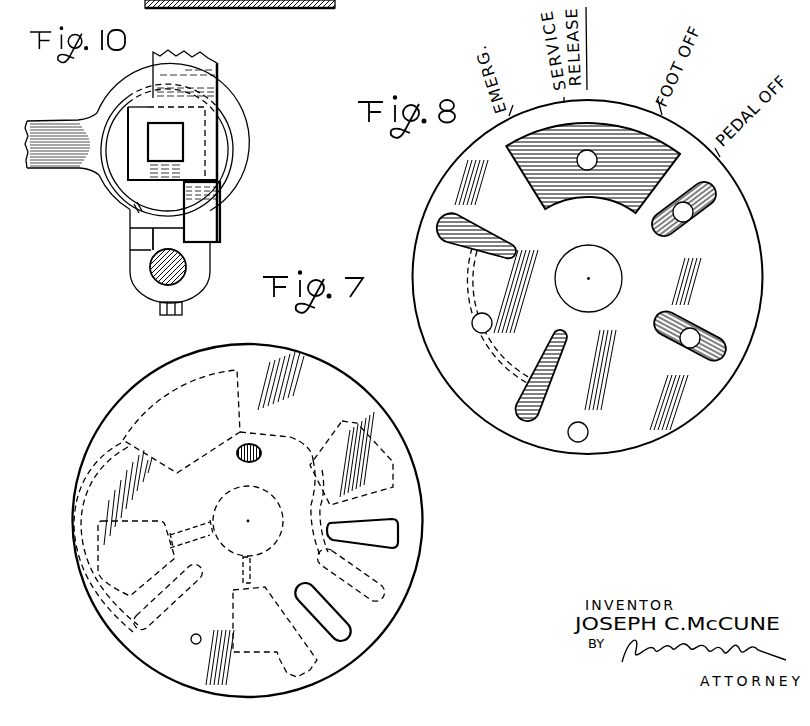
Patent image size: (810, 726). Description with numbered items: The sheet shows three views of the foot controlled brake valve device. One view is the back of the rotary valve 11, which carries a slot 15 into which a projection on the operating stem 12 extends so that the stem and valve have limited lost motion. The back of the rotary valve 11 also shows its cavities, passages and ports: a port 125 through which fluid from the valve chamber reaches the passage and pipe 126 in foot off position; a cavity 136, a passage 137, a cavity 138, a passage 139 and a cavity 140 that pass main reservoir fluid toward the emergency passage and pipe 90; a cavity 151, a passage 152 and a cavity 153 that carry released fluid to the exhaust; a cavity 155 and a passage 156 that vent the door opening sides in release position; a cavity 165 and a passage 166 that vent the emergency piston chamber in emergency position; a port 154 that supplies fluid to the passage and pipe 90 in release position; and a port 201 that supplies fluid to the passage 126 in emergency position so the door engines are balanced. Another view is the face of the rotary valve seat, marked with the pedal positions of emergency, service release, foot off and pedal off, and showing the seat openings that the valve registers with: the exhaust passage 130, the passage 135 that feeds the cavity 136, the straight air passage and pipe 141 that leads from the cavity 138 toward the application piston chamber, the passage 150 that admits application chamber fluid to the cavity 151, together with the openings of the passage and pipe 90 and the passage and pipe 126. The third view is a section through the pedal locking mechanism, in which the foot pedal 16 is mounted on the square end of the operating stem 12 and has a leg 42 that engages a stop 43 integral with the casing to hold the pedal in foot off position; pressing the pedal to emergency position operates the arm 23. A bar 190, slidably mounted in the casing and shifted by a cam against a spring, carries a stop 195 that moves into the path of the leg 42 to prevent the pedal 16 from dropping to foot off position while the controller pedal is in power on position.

In FIG. 7, the rotary valve 11 is at (130, 403).
In FIG. 10, the operating stem 12 is at (174, 137).
In FIG. 7, the slot 15 is at (254, 447).
In FIG. 10, the foot pedal 16 is at (208, 72).
In FIG. 10, the arm 23 is at (52, 132).
In FIG. 10, the leg 42 is at (200, 236).
In FIG. 10, the stop 43 is at (140, 242).
In FIG. 8, the passage and pipe 90 is at (478, 236).
In FIG. 7, the port 125 is at (385, 537).
In FIG. 8, the passage and pipe 126 is at (692, 340).
In FIG. 8, the passage 130 is at (612, 170).
In FIG. 8, the passage 135 is at (586, 431).
In FIG. 7, the cavity 136 is at (300, 665).
In FIG. 7, the passage 137 is at (252, 570).
In FIG. 7, the cavity 138 is at (259, 510).
In FIG. 7, the passage 139 is at (188, 528).
In FIG. 7, the cavity 140 is at (112, 548).
In FIG. 8, the passage and pipe 141 is at (604, 289).
In FIG. 8, the passage 150 is at (704, 197).
In FIG. 7, the cavity 151 is at (373, 473).
In FIG. 7, the passage 152 is at (288, 437).
In FIG. 7, the cavity 153 is at (188, 392).
In FIG. 7, the port 154 is at (193, 644).
In FIG. 7, the cavity 155 is at (375, 590).
In FIG. 7, the passage 156 is at (317, 515).
In FIG. 7, the cavity 165 is at (157, 618).
In FIG. 7, the passage 166 is at (98, 592).
In FIG. 10, the bar 190 is at (176, 268).
In FIG. 10, the stop 195 is at (170, 238).
In FIG. 7, the port 201 is at (335, 625).